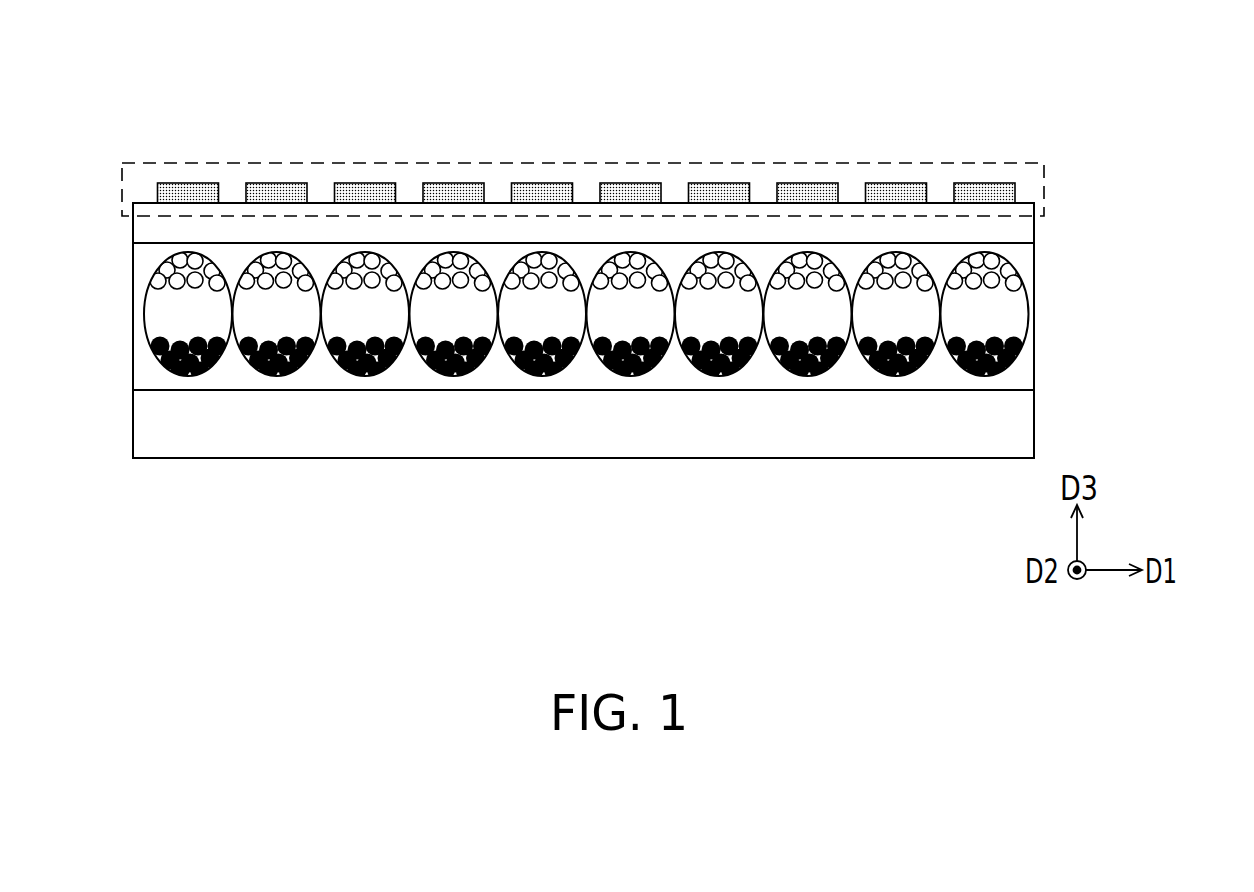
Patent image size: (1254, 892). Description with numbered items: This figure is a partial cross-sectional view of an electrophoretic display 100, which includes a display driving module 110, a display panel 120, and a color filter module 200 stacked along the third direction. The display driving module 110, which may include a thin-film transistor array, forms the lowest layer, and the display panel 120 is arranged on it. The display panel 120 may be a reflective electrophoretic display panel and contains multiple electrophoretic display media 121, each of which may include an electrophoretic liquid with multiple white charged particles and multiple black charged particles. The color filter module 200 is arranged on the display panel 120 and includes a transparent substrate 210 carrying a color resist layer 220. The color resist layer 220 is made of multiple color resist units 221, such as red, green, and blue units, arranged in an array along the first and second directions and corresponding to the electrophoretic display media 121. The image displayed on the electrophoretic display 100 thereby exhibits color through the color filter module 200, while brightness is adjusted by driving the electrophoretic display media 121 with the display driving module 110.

The electrophoretic display 100 is at (1150, 651).
The display driving module 110 is at (1034, 421).
The display panel 120 is at (1034, 286).
The electrophoretic display medium 121 is at (1020, 348).
The color filter module 200 is at (997, 13).
The transparent substrate 210 is at (1034, 229).
The color resist layer 220 is at (1044, 186).
The color resist units 221 is at (186, 182).